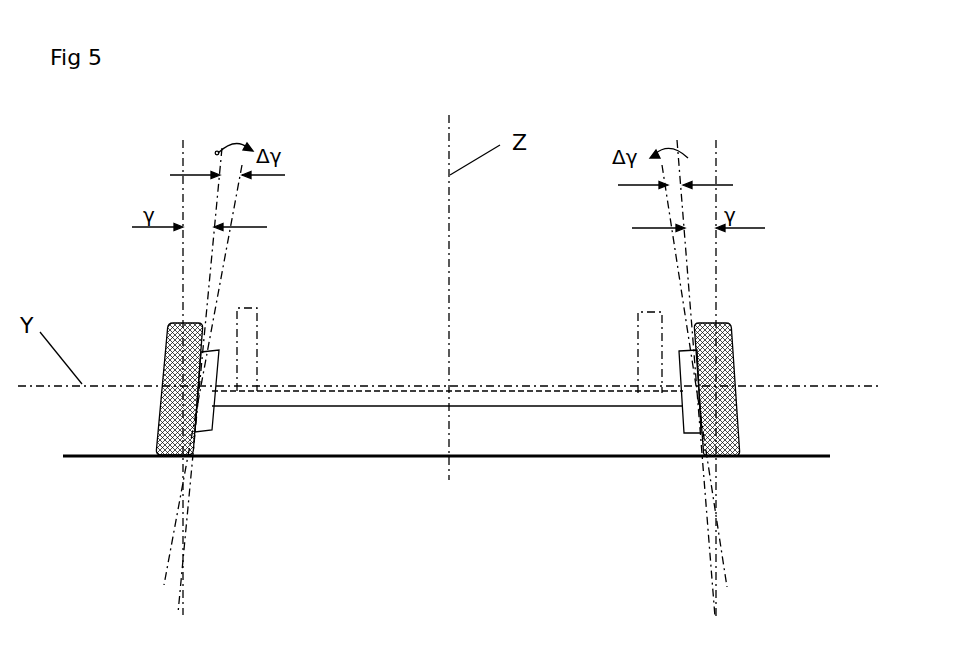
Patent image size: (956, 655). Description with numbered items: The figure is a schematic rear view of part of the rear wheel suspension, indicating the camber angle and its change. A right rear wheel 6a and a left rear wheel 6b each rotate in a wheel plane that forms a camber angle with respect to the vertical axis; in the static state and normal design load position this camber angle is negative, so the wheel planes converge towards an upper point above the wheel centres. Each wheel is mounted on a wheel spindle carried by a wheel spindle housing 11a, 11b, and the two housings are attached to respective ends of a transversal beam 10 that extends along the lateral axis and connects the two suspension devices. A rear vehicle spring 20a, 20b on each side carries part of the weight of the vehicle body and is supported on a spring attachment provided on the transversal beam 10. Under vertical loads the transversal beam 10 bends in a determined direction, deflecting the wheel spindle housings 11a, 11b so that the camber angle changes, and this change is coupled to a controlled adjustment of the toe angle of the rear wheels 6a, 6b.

The right rear wheel 6a is at (733, 435).
The left rear wheel 6b is at (158, 416).
The transversal beam 10 is at (380, 397).
The wheel spindle housing 11a is at (690, 412).
The wheel spindle housing 11b is at (207, 414).
The rear vehicle spring 20a is at (643, 350).
The rear vehicle spring 20b is at (252, 345).